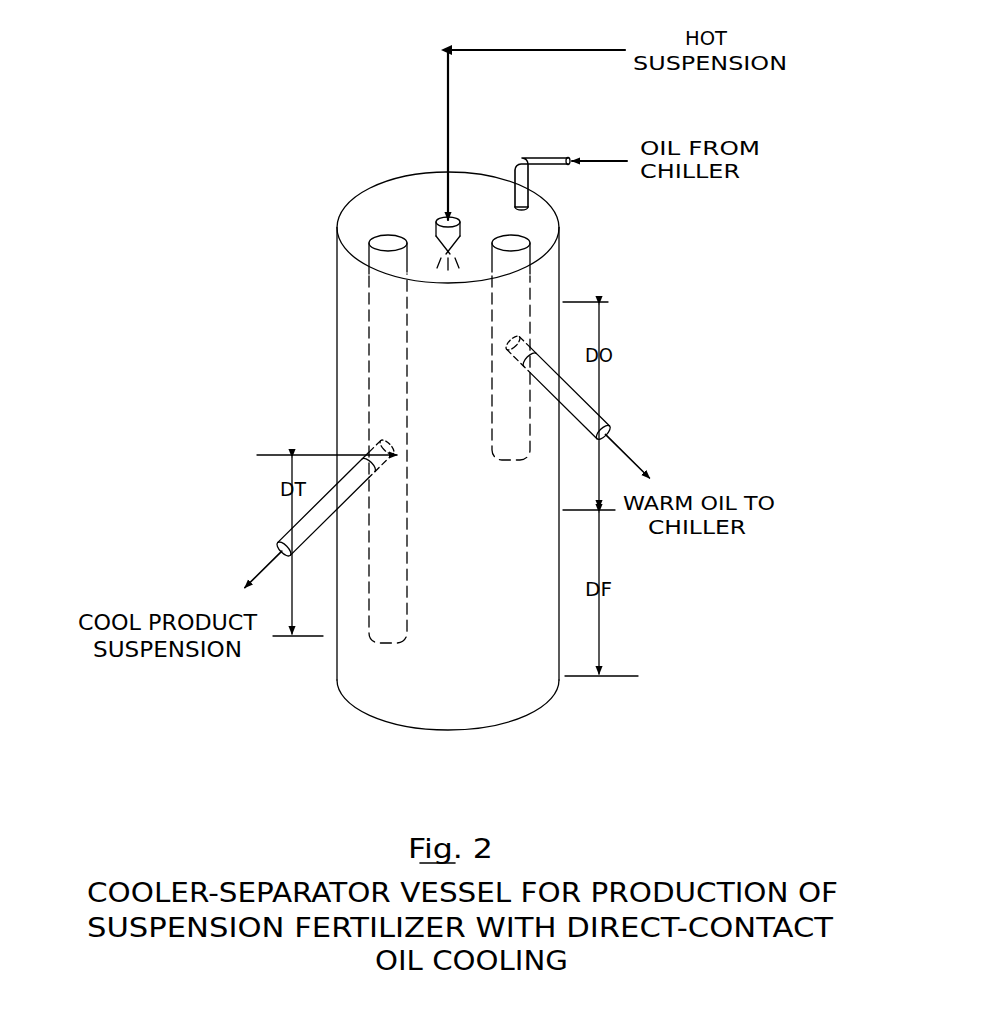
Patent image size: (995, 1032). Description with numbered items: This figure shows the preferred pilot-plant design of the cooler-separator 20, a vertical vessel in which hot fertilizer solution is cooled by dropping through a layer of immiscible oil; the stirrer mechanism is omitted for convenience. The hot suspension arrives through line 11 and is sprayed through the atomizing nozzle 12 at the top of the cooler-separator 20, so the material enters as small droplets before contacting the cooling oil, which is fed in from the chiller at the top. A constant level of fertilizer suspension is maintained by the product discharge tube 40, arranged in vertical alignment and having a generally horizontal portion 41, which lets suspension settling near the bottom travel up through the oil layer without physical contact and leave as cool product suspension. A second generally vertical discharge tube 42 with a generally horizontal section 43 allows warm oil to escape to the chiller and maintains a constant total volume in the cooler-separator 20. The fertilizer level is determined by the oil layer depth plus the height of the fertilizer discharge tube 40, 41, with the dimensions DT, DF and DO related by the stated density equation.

The line 11 is at (451, 108).
The atomizing nozzle 12 is at (455, 221).
The cooler-separator 20 is at (337, 270).
The product discharge tube 40 is at (369, 404).
The generally horizontal portion 41 is at (278, 537).
The second generally vertical discharge tube 42 is at (528, 284).
The generally horizontal section 43 is at (608, 412).